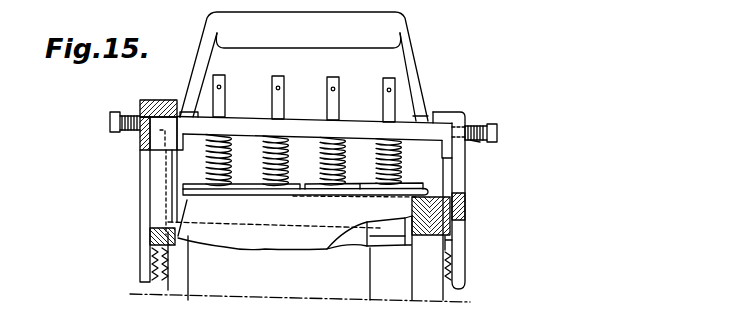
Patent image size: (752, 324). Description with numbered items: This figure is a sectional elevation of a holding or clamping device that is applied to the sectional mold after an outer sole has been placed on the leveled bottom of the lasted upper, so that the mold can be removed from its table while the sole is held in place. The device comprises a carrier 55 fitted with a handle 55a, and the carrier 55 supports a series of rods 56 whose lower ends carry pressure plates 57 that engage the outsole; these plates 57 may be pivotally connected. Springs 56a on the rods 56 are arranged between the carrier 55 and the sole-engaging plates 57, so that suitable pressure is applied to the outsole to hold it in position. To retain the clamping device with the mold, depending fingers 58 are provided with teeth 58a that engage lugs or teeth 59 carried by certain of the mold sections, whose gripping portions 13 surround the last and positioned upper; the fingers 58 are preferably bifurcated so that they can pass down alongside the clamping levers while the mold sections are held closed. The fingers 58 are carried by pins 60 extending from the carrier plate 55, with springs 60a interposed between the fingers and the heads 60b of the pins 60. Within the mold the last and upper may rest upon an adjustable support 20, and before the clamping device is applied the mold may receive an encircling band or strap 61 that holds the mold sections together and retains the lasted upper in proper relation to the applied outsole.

The gripping portions 13 is at (165, 208).
The adjustable support 20 is at (374, 232).
The carrier 55 is at (300, 126).
The handle 55a is at (304, 66).
The rods 56 is at (387, 80).
The springs 56a is at (290, 160).
The pressure plates 57 is at (262, 185).
The depending fingers 58 is at (139, 213).
The teeth 58a is at (481, 272).
The lugs or teeth 59 is at (147, 250).
The pins 60 is at (482, 121).
The springs 60a is at (476, 142).
The heads 60b is at (497, 133).
The encircling band or strap 61 is at (466, 210).